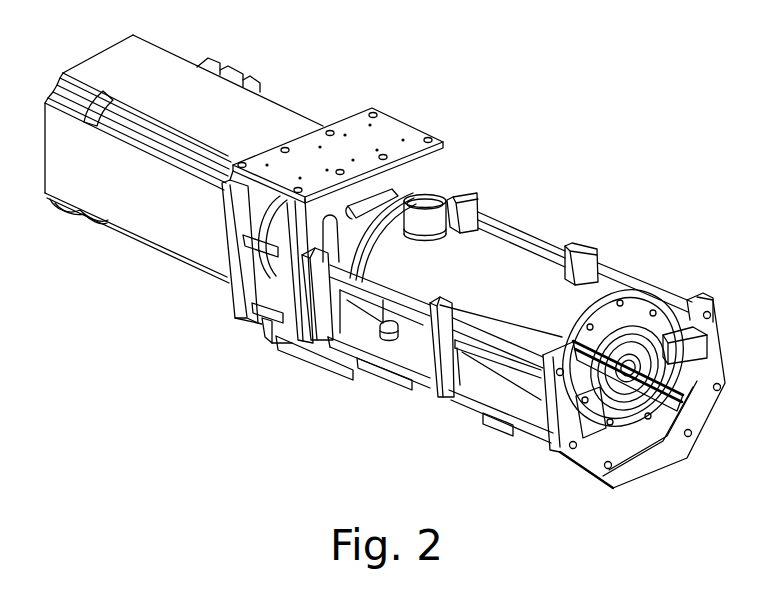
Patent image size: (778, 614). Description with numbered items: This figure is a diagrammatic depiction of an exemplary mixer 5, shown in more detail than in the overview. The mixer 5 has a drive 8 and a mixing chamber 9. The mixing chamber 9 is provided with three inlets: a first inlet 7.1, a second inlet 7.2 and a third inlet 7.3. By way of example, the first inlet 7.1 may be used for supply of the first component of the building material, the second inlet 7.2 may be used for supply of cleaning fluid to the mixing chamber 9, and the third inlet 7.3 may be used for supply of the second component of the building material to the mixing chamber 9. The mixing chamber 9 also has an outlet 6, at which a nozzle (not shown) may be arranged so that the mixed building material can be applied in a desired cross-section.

The mixer 5 is at (500, 54).
The outlet 6 is at (585, 452).
The first inlet 7.1 is at (428, 201).
The second inlet 7.2 is at (378, 338).
The third inlet 7.3 is at (400, 375).
The drive 8 is at (263, 118).
The mixing chamber 9 is at (517, 270).